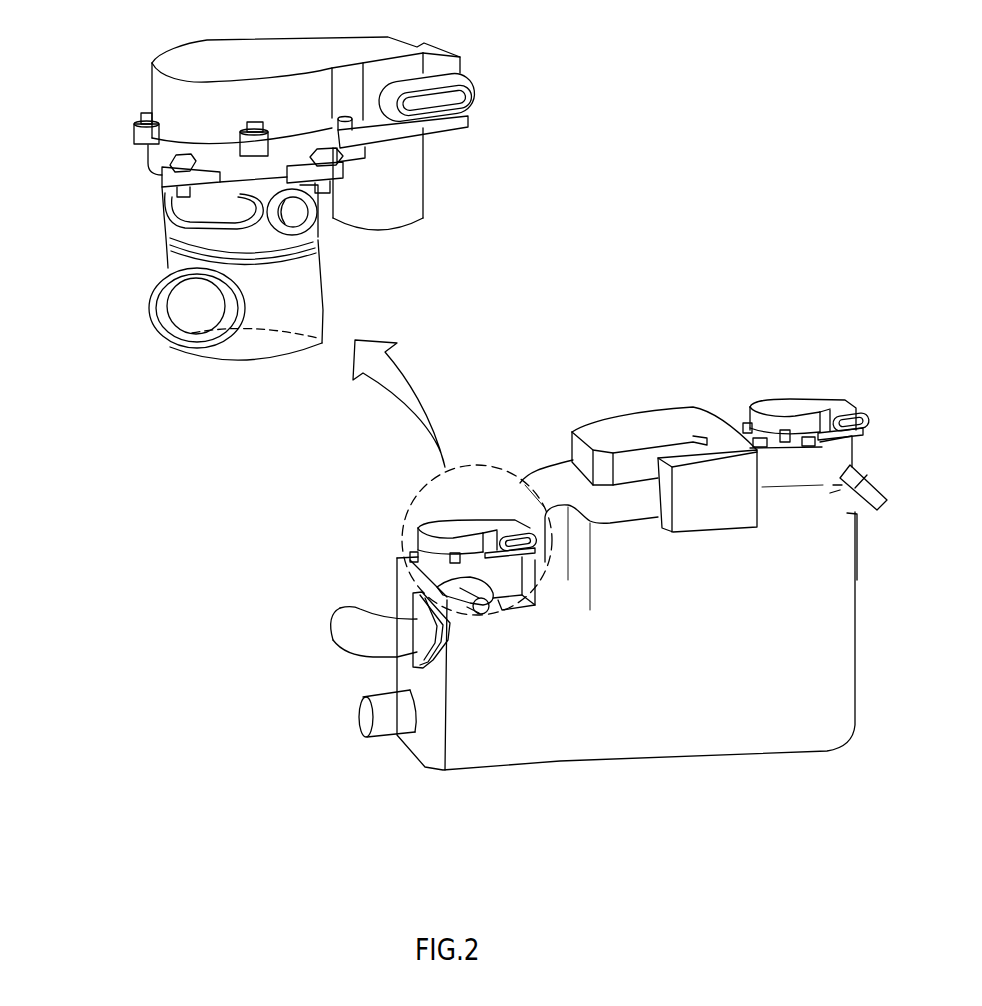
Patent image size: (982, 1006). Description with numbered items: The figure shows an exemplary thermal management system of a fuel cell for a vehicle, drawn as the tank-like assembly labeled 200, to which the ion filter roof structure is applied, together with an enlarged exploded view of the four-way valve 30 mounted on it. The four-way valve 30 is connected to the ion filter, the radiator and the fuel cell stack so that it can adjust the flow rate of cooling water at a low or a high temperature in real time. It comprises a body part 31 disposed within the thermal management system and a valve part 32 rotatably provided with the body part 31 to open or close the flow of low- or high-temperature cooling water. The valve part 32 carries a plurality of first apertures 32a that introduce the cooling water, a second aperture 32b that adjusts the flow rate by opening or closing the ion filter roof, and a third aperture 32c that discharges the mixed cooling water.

The reservoir tank 200 is at (584, 394).
The 4-way valve 30 is at (451, 326).
The body part 31 is at (163, 101).
The valve part 32 is at (244, 295).
The first apertures 32a is at (190, 327).
The second aperture 32b is at (314, 238).
The third aperture 32c is at (210, 332).